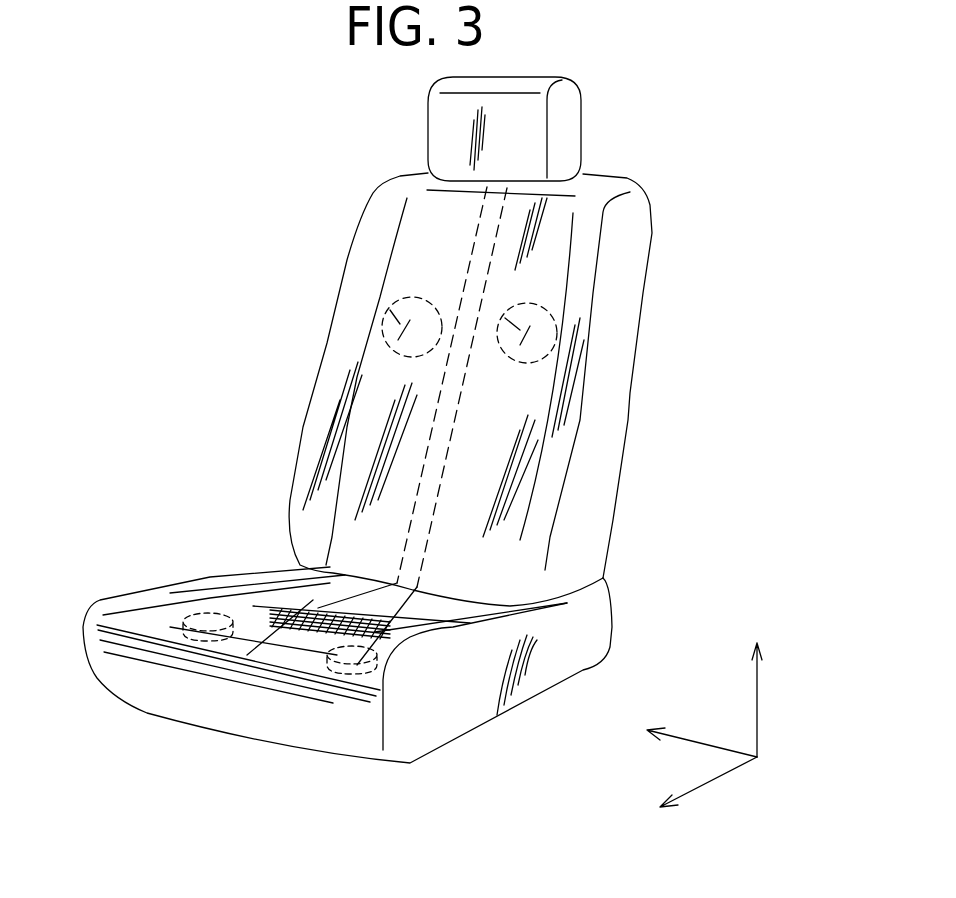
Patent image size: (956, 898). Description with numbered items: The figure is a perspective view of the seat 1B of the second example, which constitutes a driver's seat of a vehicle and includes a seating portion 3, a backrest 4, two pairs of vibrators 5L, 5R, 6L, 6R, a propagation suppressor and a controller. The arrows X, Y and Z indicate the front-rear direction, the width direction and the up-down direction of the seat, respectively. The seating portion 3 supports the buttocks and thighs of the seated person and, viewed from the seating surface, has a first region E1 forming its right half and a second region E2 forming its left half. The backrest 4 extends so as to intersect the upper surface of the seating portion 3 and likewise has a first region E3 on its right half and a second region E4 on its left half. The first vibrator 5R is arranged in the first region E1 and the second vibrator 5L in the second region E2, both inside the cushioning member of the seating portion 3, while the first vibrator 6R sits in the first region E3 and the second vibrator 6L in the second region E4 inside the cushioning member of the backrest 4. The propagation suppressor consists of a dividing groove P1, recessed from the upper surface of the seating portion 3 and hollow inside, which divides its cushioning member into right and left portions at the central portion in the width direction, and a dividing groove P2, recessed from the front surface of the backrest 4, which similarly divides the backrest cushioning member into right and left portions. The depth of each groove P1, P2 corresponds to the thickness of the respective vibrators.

The seat 1B is at (673, 148).
The seating portion 3 is at (483, 693).
The backrest 4 is at (623, 400).
The first vibrator 5R is at (190, 653).
The second vibrator 5L is at (337, 690).
The first vibrator 6R is at (380, 300).
The second vibrator 6L is at (557, 303).
The dividing groove P1 is at (240, 571).
The dividing groove P2 is at (447, 410).
The first region E1 is at (213, 597).
The second region E2 is at (510, 641).
The first region E3 is at (427, 260).
The second region E4 is at (545, 270).
The arrow X is at (717, 779).
The arrow Y is at (710, 742).
The arrow Z is at (760, 710).